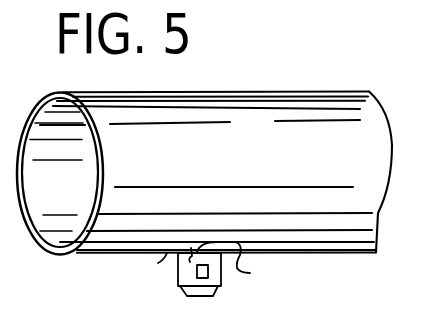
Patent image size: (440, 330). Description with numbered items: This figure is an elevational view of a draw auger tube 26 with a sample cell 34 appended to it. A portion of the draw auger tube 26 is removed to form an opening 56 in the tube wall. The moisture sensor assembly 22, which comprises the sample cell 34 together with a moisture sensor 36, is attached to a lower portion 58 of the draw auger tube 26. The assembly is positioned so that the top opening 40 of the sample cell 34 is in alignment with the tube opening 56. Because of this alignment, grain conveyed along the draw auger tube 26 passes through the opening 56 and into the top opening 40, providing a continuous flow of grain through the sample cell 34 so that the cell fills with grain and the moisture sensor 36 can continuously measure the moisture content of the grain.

The draw auger tube 26 is at (262, 92).
The sample cell 34 is at (178, 271).
The moisture sensor assembly 22 is at (229, 303).
The moisture sensor 36 is at (208, 273).
The opening 56 is at (250, 273).
The lower portion 58 is at (158, 263).
The top opening 40 is at (191, 252).